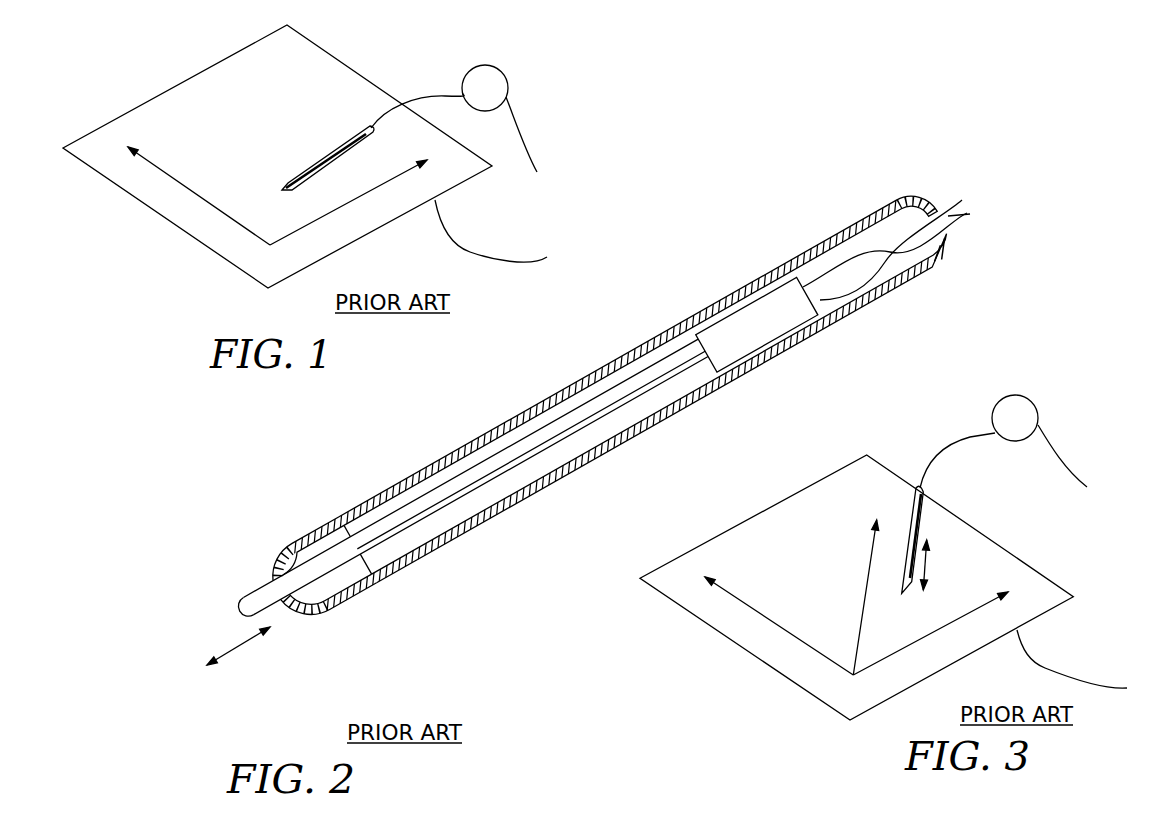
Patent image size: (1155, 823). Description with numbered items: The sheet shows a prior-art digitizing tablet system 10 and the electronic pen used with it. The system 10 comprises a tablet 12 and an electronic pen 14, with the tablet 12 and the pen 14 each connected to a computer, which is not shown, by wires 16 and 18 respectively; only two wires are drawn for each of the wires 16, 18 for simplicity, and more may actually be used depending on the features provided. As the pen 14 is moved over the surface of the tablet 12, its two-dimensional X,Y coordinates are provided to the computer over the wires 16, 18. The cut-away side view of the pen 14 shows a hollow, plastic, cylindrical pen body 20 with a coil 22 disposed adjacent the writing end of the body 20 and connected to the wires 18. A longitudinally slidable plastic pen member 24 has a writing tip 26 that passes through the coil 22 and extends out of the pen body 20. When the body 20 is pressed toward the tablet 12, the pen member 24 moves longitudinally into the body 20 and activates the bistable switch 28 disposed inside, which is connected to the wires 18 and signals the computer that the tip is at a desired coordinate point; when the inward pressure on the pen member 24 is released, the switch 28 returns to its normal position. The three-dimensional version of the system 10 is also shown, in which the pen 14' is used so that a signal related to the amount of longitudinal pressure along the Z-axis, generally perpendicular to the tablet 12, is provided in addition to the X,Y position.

In FIG. 1, the digitizing tablet system 10 is at (162, 235).
In FIG. 3, the digitizing tablet system 10 is at (740, 667).
In FIG. 1, the tablet 12 is at (188, 77).
In FIG. 3, the tablet 12 is at (768, 507).
In FIG. 1, the electronic pen 14 is at (326, 143).
In FIG. 2, the electronic pen 14 is at (587, 421).
In FIG. 3, the pen 14' is at (965, 539).
In FIG. 1, the wires 16 is at (457, 233).
In FIG. 3, the wires 16 is at (1037, 665).
In FIG. 1, the wires 18 is at (512, 127).
In FIG. 2, the wires 18 is at (947, 195).
In FIG. 3, the wires 18 is at (977, 435).
In FIG. 2, the pen body 20 is at (472, 437).
In FIG. 2, the coil 22 is at (328, 545).
In FIG. 2, the pen member 24 is at (418, 507).
In FIG. 2, the writing tip 26 is at (240, 606).
In FIG. 2, the bistable switch 28 is at (802, 313).